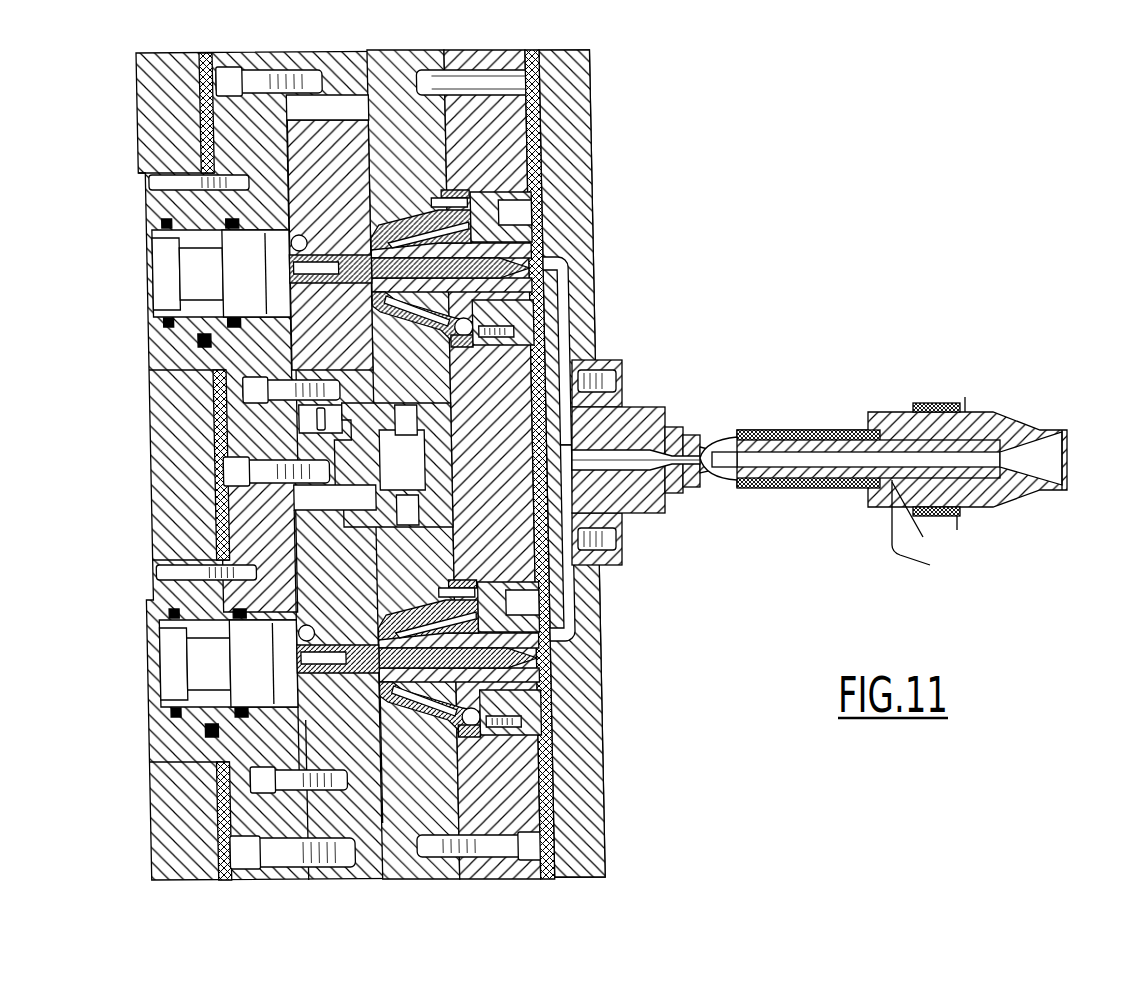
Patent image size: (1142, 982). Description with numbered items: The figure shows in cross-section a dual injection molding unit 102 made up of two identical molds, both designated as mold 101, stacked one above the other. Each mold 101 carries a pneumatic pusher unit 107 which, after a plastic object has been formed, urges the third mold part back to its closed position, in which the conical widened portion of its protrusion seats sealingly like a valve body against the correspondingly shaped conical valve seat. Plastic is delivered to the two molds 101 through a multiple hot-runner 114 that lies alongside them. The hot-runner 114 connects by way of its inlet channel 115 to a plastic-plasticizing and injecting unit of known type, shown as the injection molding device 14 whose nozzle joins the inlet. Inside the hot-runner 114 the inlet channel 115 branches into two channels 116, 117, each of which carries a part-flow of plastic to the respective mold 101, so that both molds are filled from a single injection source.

The injection mold 101 is at (401, 58).
The dual injection molding unit 102 is at (620, 742).
The pneumatic pusher unit 107 is at (238, 258).
The multiple hot-runner 114 is at (587, 597).
The inlet channel 115 is at (628, 462).
The channel 116 is at (562, 313).
The channel 117 is at (580, 627).
The injection molding device 14 is at (966, 382).